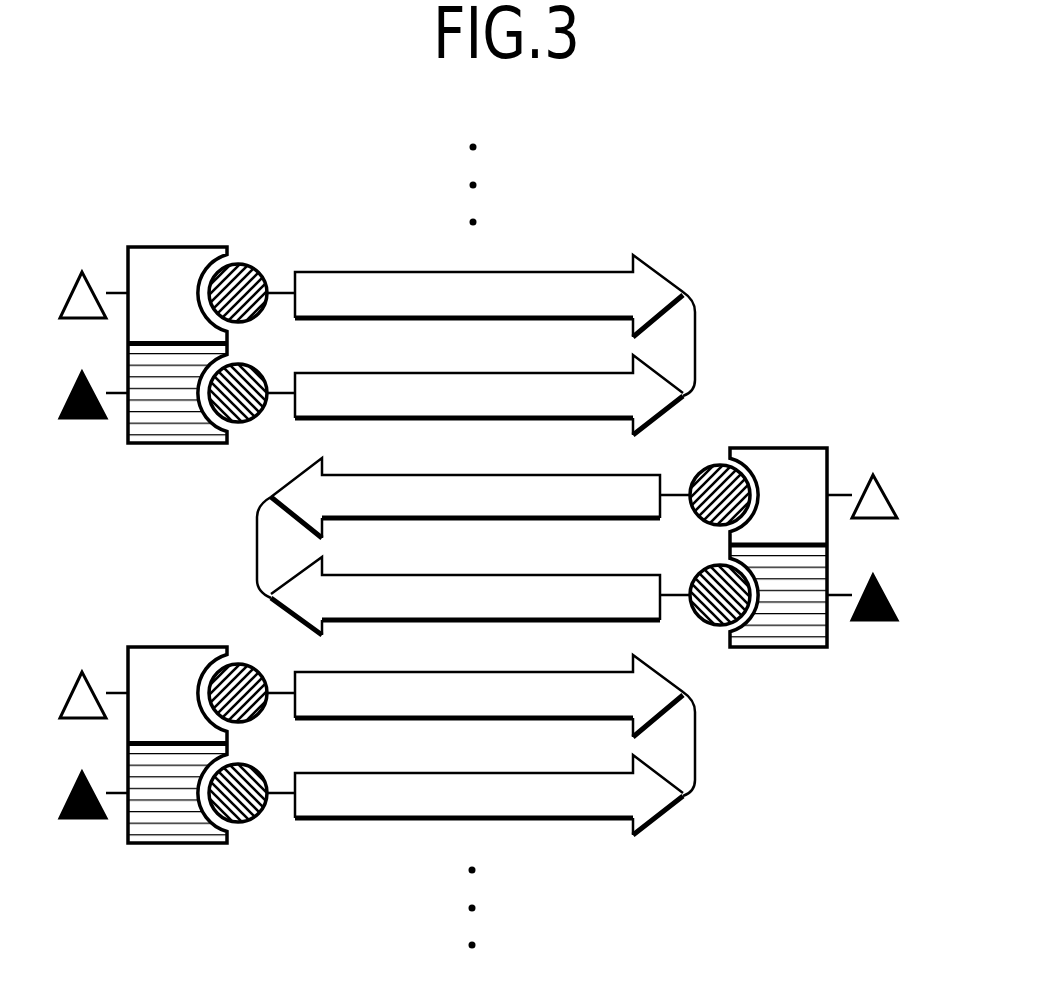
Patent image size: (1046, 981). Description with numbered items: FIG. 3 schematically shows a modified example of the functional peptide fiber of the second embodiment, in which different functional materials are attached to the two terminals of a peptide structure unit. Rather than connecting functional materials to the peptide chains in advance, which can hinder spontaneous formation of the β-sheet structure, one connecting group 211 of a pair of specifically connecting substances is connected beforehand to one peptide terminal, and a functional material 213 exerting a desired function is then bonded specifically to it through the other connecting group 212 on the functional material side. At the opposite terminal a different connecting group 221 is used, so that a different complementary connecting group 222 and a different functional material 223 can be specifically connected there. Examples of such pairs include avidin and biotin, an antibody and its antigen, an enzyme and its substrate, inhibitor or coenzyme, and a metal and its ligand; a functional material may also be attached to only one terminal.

The connecting group 211 is at (702, 450).
The connecting group 212 is at (777, 450).
The functional material 213 is at (880, 500).
The connecting group 221 is at (697, 645).
The connecting group 222 is at (778, 645).
The functional material 223 is at (925, 582).